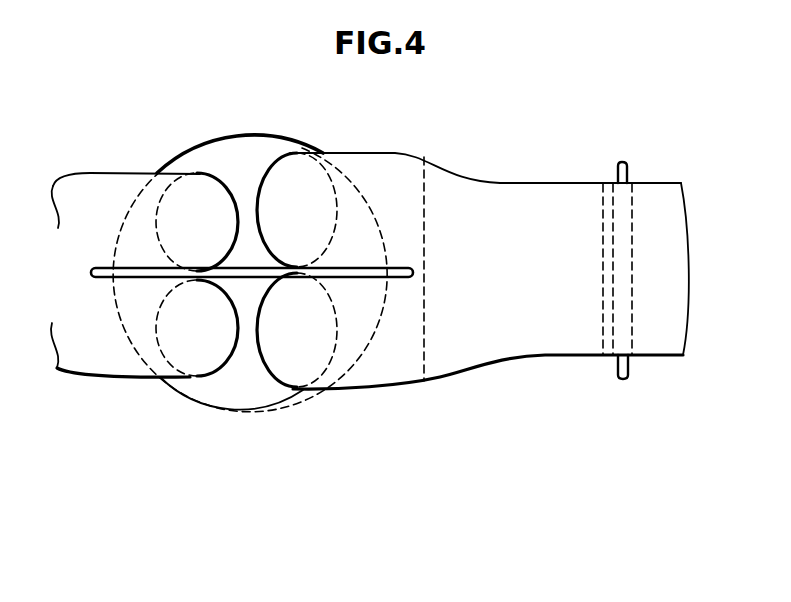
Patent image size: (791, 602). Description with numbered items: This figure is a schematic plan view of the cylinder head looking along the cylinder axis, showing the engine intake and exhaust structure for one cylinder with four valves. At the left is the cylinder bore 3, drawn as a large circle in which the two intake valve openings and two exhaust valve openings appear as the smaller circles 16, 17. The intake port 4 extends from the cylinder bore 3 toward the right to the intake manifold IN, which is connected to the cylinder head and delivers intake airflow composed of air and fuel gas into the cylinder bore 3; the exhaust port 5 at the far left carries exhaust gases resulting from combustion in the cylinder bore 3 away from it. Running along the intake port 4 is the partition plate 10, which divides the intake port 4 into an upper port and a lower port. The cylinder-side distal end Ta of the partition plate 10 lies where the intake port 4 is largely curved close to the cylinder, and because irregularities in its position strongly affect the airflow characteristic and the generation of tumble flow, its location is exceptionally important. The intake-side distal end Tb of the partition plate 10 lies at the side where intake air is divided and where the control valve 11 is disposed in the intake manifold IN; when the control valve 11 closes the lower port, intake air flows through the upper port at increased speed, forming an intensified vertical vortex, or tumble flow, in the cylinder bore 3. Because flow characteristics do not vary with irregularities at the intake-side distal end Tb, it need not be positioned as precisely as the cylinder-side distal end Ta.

The cylinder bore 3 is at (227, 424).
The intake port 4 is at (574, 385).
The exhaust port 5 is at (98, 393).
The partition plate 10 is at (405, 348).
The control valve 11 is at (648, 195).
The passage bore 16 is at (287, 177).
The passage bore 17 is at (205, 190).
The cylinder-side distal end Ta is at (418, 208).
The intake-side distal end Tb is at (598, 217).
The intake manifold IN is at (670, 375).